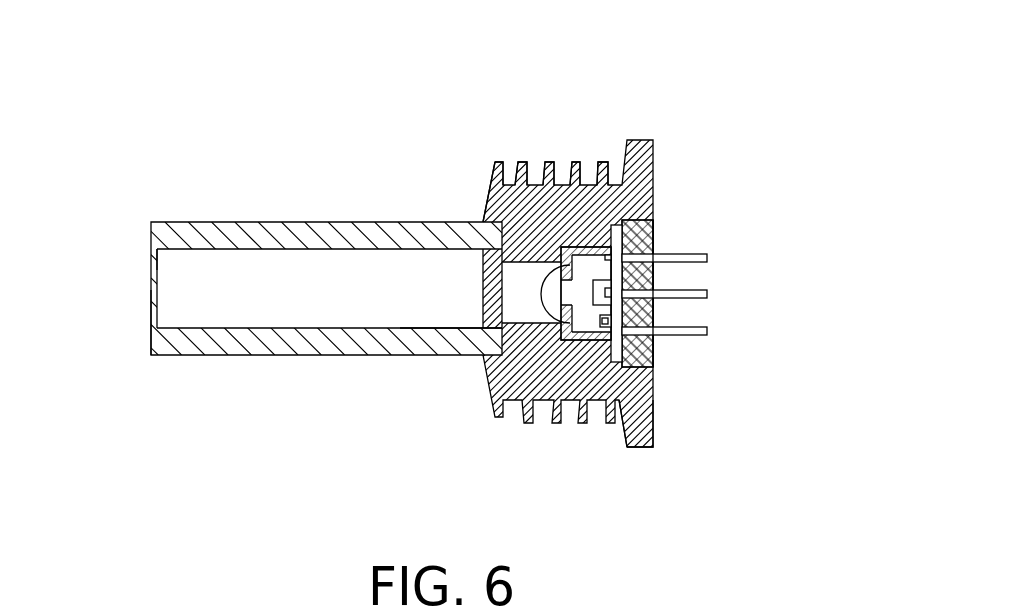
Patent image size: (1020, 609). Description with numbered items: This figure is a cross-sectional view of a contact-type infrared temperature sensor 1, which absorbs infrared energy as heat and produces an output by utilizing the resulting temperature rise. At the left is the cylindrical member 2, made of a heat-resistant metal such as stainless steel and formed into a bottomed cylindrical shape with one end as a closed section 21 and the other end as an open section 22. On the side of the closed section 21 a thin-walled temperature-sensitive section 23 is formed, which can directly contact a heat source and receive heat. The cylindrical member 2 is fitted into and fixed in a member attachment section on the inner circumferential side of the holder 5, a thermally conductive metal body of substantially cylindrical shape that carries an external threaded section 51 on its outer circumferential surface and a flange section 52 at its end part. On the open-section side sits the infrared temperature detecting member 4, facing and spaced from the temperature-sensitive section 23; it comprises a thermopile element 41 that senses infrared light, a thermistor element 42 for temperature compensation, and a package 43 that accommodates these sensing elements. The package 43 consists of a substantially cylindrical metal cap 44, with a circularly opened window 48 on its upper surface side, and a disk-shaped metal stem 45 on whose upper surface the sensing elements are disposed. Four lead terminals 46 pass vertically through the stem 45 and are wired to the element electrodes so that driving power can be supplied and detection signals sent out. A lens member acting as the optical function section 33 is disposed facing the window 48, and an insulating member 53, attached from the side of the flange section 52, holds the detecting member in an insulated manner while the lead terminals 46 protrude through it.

The contact-type infrared temperature sensor 1 is at (292, 83).
The cylindrical member 2 is at (310, 231).
The closed section 21 is at (153, 305).
The open section 22 is at (492, 323).
The temperature-sensitive section 23 is at (157, 262).
The optical function section 33 is at (550, 282).
The infrared temperature detecting member 4 is at (641, 213).
The thermopile element 41 is at (612, 281).
The thermistor element 42 is at (611, 318).
The package 43 is at (594, 281).
The cap 44 is at (563, 250).
The stem 45 is at (620, 350).
The lead terminals 46 is at (685, 255).
The window 48 is at (567, 338).
The holder 5 is at (643, 173).
The external threaded section 51 is at (535, 178).
The flange section 52 is at (643, 428).
The insulating member 53 is at (643, 343).